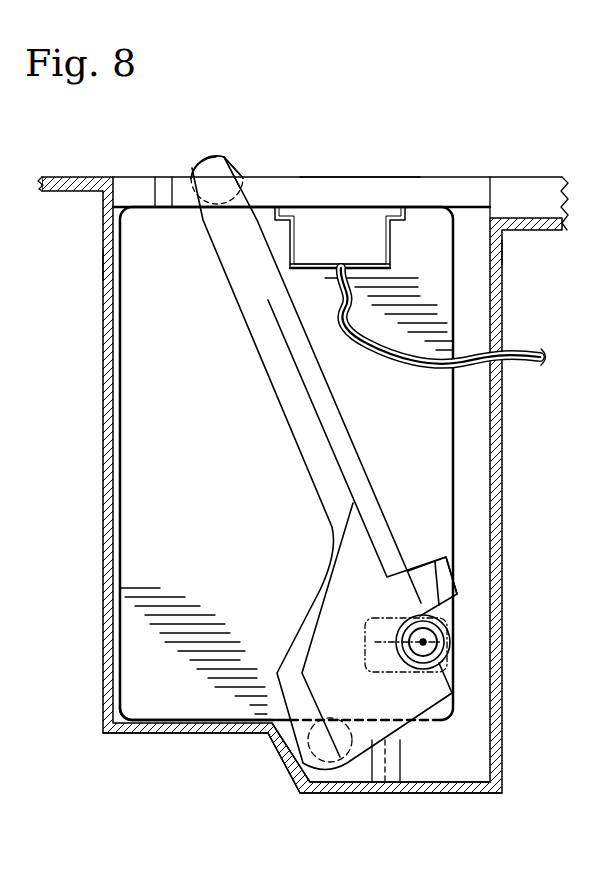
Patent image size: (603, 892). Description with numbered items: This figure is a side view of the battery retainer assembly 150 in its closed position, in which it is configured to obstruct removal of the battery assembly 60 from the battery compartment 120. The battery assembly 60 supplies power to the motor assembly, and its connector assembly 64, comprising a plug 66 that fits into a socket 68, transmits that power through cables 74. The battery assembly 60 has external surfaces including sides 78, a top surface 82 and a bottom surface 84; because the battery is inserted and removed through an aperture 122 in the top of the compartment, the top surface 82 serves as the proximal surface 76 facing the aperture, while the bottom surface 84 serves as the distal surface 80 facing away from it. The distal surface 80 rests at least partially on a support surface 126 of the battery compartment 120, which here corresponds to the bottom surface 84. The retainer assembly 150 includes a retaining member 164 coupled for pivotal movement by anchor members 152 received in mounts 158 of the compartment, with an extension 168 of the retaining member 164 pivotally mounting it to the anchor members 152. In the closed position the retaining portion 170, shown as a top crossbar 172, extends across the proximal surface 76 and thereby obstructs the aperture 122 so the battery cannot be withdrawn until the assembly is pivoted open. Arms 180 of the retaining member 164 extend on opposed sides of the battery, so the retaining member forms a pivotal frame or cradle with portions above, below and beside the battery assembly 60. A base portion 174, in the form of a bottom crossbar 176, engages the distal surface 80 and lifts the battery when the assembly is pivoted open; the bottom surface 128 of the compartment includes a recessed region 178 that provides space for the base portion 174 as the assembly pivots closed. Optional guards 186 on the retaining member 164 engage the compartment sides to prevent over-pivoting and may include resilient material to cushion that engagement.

The battery assembly 60 is at (445, 437).
The connector assembly 64 is at (406, 252).
The plug 66 is at (372, 218).
The socket 68 is at (410, 221).
The cables 74 is at (538, 357).
The proximal surface 76 is at (143, 200).
The sides 78 is at (104, 417).
The distal surface 80 is at (440, 716).
The top surface 82 is at (172, 206).
The bottom surface 84 is at (410, 726).
The battery compartment 120 is at (303, 190).
The aperture 122 is at (345, 177).
The support surface 126 is at (195, 720).
The bottom surface 128 is at (222, 722).
The battery retainer assembly 150 is at (221, 146).
The anchor members 152 is at (452, 630).
The mounts 158 is at (447, 640).
The retaining member 164 is at (206, 152).
The extension 168 is at (432, 652).
The retaining portion 170 is at (238, 160).
The top crossbar 172 is at (246, 173).
The base portion 174 is at (352, 743).
The bottom crossbar 176 is at (297, 765).
The recessed region 178 is at (441, 785).
The arms 180 is at (333, 425).
The guards 186 is at (458, 580).